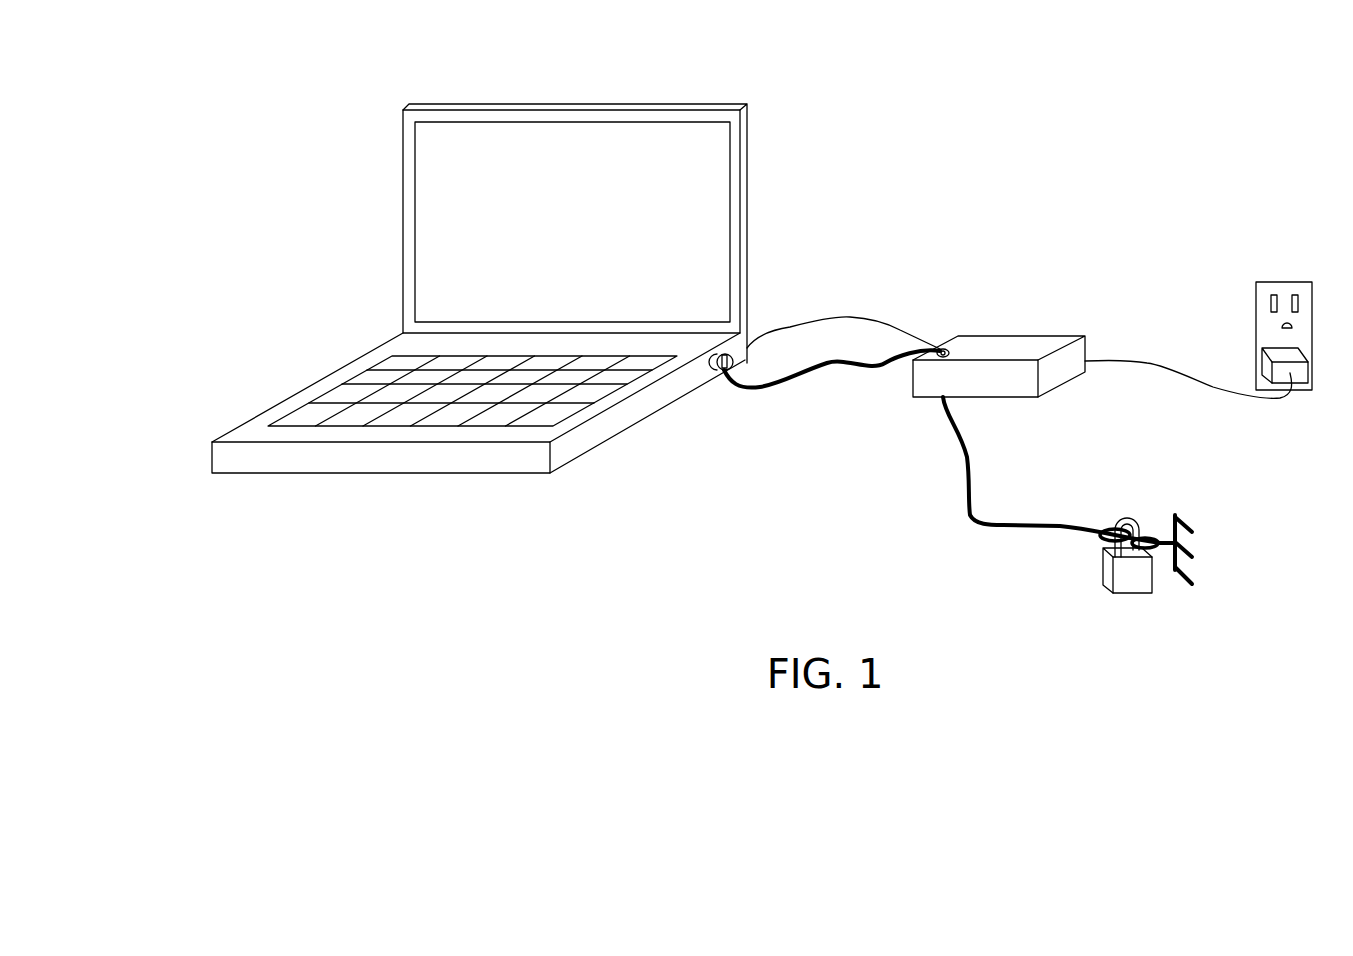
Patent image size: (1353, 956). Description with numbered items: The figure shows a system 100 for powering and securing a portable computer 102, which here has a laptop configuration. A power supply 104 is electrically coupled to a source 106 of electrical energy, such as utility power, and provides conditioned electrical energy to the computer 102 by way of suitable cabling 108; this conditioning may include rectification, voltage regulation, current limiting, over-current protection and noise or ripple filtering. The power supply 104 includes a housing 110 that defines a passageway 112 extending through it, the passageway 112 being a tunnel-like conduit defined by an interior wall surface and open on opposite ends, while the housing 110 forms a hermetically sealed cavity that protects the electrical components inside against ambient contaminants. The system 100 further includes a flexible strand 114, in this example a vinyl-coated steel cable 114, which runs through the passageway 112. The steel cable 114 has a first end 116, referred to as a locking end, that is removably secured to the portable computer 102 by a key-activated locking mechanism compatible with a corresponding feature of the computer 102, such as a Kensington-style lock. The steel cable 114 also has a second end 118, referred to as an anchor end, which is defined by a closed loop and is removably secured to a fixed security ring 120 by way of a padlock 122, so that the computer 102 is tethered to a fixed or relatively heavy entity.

The system 100 is at (978, 48).
The portable computer 102 is at (560, 214).
The power supply 104 is at (1030, 328).
The source of electrical energy 106 is at (1272, 282).
The cabling 108 is at (822, 318).
The housing 110 is at (975, 389).
The passageway 112 is at (944, 349).
The flexible strand 114 is at (797, 375).
The first end 116 is at (722, 372).
The second end 118 is at (1106, 529).
The fixed security ring 120 is at (1150, 536).
The padlock 122 is at (1140, 597).